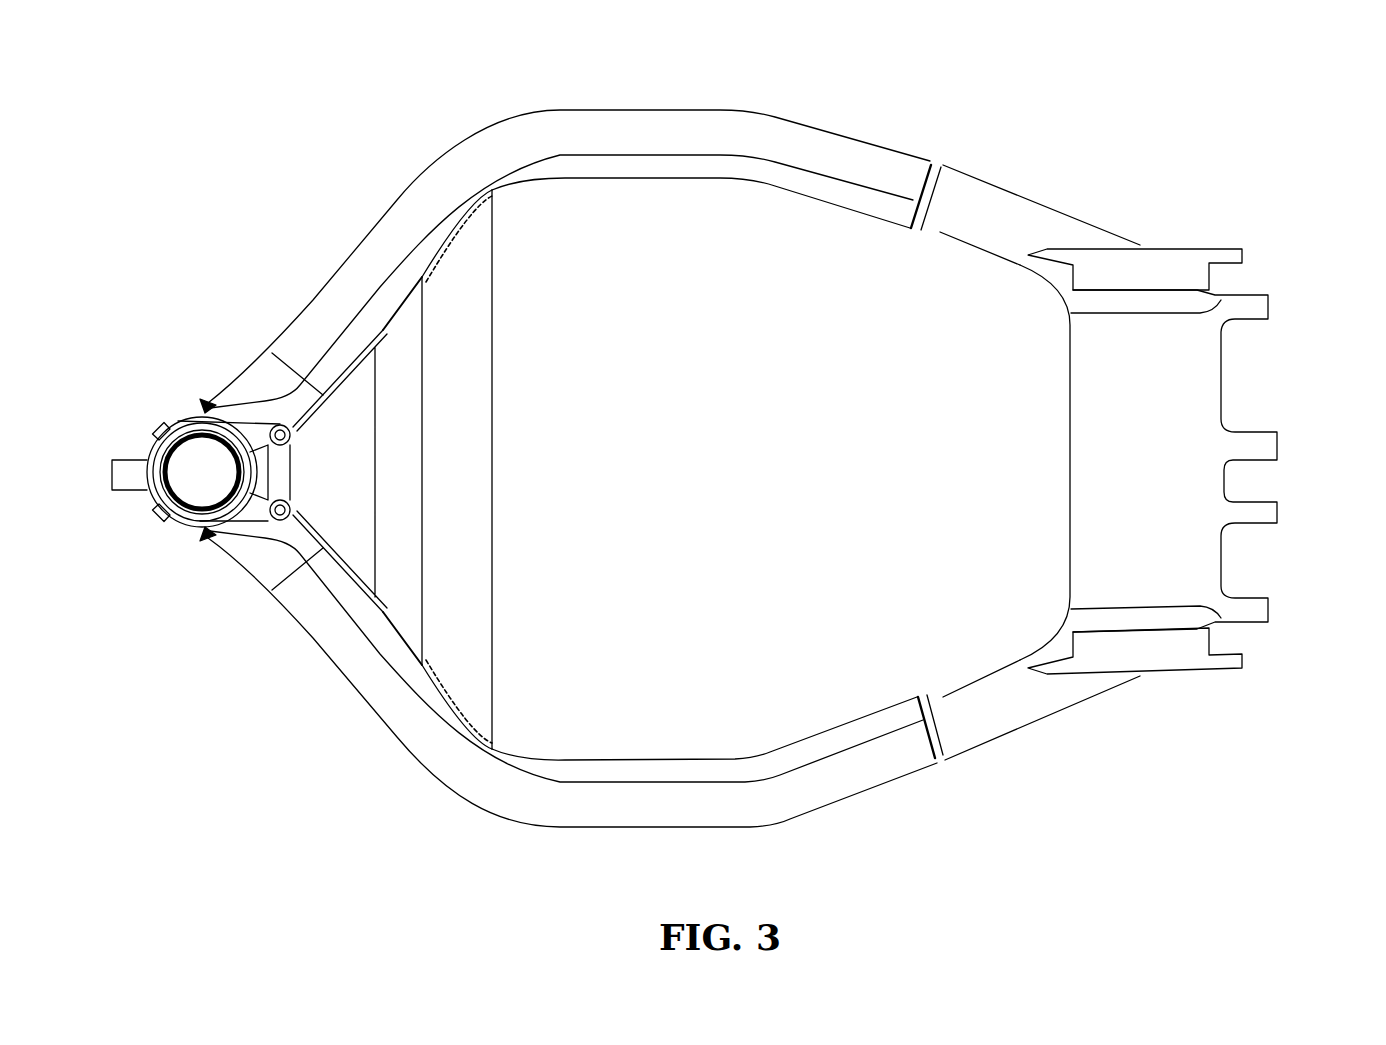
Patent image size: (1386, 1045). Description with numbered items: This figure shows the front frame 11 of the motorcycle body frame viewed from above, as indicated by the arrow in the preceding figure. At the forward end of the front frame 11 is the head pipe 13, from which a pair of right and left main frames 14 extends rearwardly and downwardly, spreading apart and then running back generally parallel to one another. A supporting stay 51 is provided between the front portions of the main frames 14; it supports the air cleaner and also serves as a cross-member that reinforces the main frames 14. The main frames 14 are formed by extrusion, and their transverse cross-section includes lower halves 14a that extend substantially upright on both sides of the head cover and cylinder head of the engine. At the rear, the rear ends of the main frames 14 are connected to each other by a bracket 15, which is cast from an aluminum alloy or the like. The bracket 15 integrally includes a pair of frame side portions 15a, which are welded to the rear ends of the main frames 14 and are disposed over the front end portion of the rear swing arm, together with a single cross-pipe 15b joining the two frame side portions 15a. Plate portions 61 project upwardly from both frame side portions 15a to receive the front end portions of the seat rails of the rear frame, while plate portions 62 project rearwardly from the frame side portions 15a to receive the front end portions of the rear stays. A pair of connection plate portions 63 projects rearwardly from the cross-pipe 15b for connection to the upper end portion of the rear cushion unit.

The front frame 11 is at (670, 468).
The head pipe 13 is at (183, 436).
The main frame 14 is at (726, 181).
The lower half 14a is at (770, 142).
The bracket 15 is at (1026, 492).
The frame side portion 15a is at (975, 237).
The cross-pipe 15b is at (1092, 450).
The supporting stay 51 is at (488, 492).
The plate portion 61 is at (1166, 471).
The plate portion 62 is at (1215, 250).
The connection plate portion 63 is at (1270, 507).